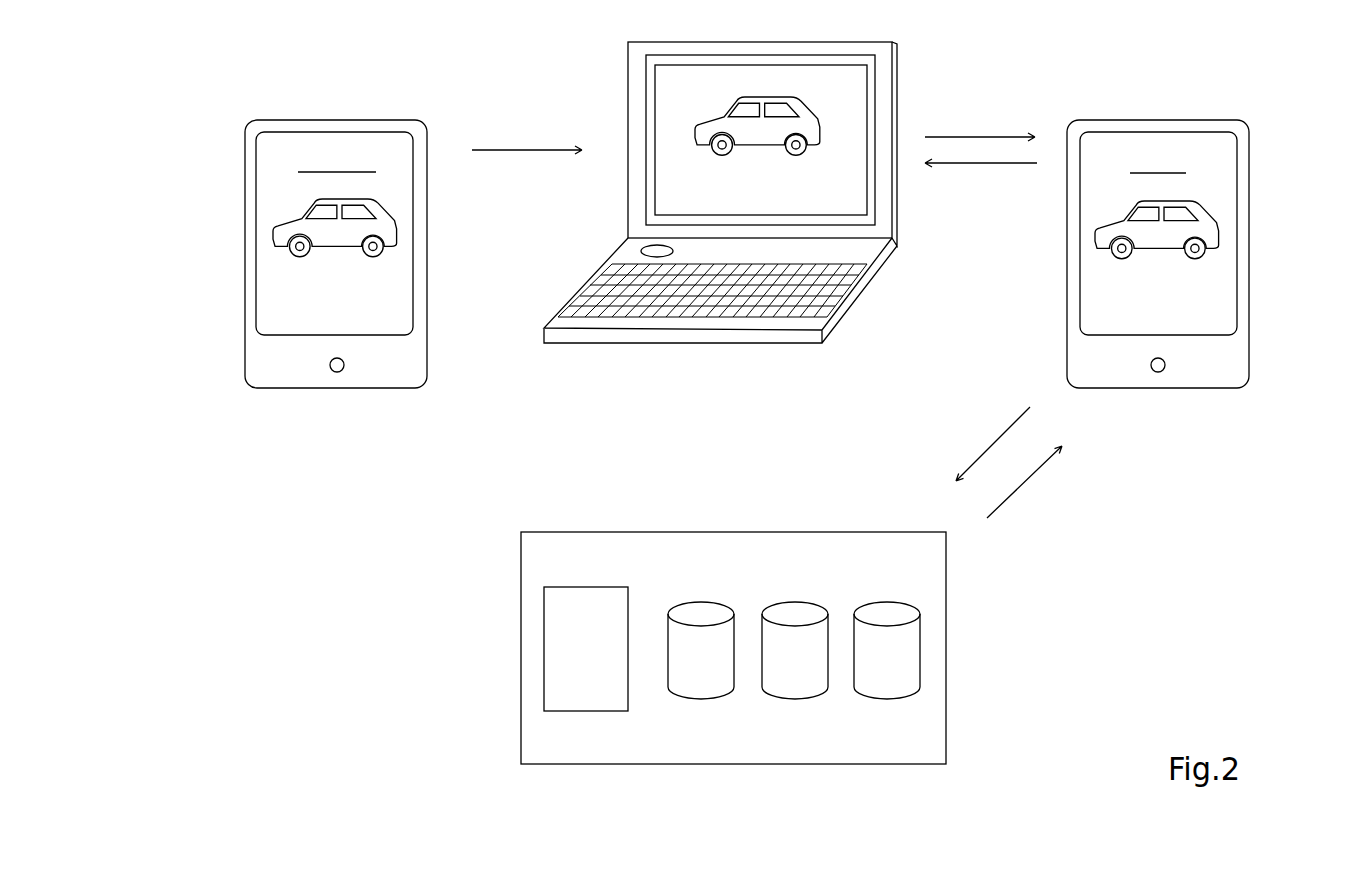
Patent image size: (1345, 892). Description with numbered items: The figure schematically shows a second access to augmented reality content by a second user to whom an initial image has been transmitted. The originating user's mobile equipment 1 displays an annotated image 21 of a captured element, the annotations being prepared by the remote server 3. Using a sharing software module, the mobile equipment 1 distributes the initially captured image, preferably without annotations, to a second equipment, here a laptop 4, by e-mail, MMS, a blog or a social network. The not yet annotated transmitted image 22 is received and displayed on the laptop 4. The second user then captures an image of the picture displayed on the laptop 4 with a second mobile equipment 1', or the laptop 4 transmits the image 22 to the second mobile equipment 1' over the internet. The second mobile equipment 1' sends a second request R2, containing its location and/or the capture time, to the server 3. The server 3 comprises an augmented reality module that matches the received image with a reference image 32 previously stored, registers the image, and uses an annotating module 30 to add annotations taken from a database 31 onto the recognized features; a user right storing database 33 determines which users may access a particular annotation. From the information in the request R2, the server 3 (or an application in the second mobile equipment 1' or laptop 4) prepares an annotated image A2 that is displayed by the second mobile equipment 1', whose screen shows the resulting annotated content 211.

The mobile equipment 1 is at (336, 294).
The annotated image 21 is at (250, 210).
The transmitted image 22 is at (855, 88).
The laptop 4 is at (592, 345).
The second mobile equipment 1' is at (1158, 293).
The displayed information element 211 is at (1193, 162).
The second request R2 is at (991, 444).
The annotated image A2 is at (1028, 482).
The remote server 3 is at (595, 765).
The annotating module 30 is at (586, 649).
The database 31 is at (701, 650).
The reference image 32 is at (795, 650).
The user right storing database 33 is at (887, 650).